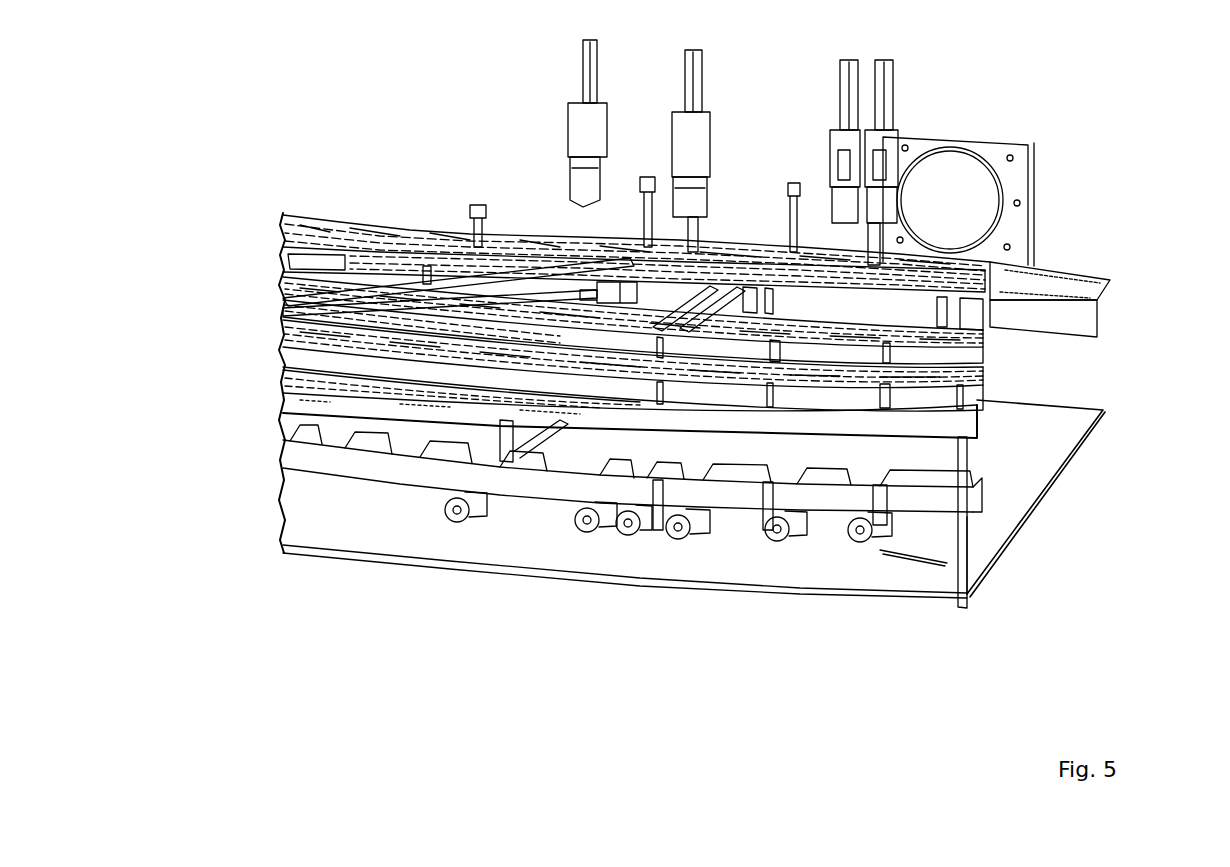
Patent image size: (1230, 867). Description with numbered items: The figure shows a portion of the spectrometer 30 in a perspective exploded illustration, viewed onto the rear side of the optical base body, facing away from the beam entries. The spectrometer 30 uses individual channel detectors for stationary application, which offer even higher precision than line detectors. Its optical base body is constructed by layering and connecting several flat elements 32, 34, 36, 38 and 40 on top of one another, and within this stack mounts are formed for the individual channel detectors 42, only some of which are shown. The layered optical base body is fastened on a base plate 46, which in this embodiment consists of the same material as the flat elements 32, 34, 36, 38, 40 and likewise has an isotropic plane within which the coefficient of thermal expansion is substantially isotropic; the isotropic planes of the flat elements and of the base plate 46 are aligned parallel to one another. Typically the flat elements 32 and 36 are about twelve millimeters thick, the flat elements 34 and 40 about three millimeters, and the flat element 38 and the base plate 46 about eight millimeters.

The spectrometer 30 is at (1140, 114).
The flat element 32 is at (297, 455).
The flat element 34 is at (288, 383).
The flat element 36 is at (297, 358).
The flat element 38 is at (293, 312).
The flat element 40 is at (297, 223).
The individual channel detectors 42 is at (577, 133).
The base plate 46 is at (367, 530).